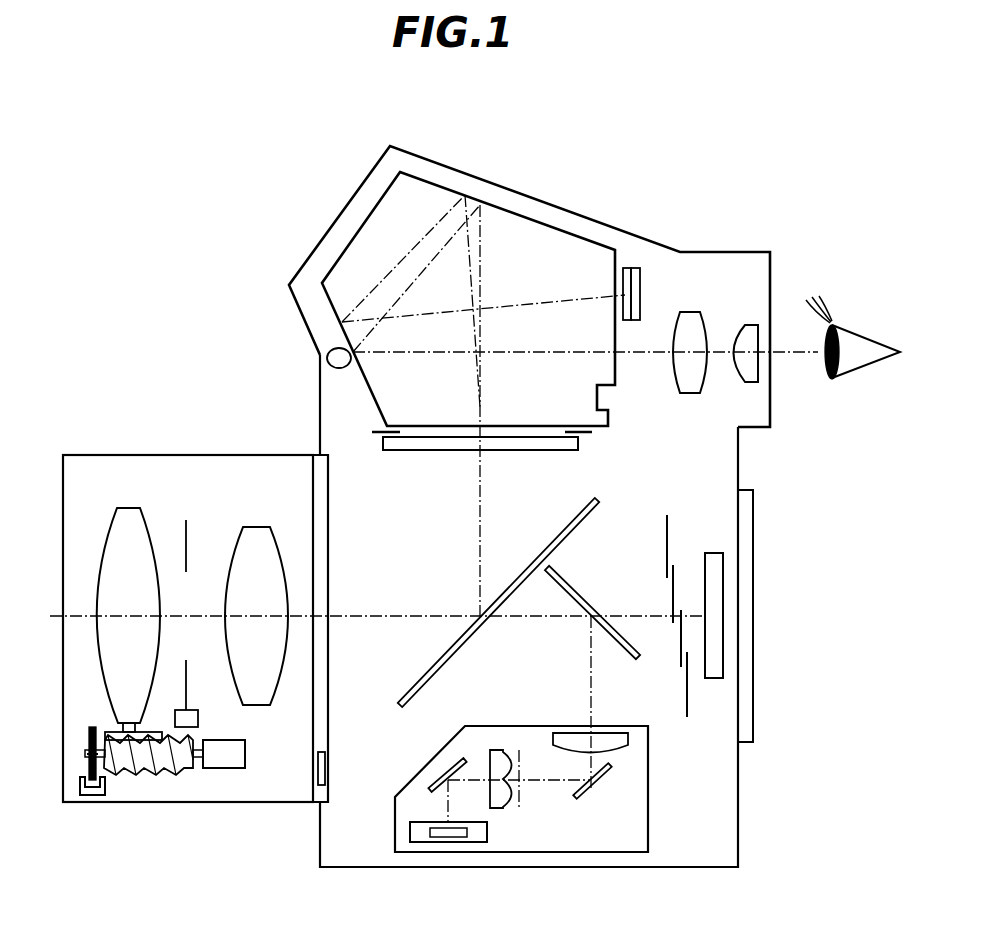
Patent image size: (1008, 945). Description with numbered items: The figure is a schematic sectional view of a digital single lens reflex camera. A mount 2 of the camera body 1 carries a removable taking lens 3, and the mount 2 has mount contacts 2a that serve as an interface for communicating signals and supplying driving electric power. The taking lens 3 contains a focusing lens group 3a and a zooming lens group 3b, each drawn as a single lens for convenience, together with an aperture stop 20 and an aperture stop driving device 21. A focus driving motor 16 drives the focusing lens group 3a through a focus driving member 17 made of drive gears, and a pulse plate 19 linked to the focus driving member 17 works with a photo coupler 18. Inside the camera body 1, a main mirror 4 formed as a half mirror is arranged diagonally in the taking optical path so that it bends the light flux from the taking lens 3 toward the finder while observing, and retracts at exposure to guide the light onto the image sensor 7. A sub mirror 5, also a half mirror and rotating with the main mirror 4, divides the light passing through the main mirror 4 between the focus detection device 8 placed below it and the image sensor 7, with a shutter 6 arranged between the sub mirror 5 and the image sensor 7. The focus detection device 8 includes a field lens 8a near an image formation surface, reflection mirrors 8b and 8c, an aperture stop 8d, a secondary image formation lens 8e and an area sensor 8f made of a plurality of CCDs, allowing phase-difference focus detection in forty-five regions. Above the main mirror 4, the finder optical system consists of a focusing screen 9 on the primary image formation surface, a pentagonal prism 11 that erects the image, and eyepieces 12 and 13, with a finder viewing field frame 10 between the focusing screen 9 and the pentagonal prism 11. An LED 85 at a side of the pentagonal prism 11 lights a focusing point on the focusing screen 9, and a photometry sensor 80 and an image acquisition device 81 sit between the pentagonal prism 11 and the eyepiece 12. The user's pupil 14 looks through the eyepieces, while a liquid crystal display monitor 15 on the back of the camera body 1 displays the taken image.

The camera body 1 is at (488, 185).
The mount 2 is at (330, 537).
The mount contacts 2a is at (325, 752).
The taking lens 3 is at (75, 455).
The focusing lens group 3a is at (128, 508).
The zooming lens group 3b is at (258, 527).
The main mirror 4 is at (562, 528).
The sub mirror 5 is at (577, 593).
The shutter 6 is at (665, 533).
The image sensor 7 is at (718, 552).
The focus detection device 8 is at (602, 725).
The field lens 8a is at (628, 737).
The reflection mirror 8b is at (608, 783).
The reflection mirror 8c is at (448, 762).
The aperture stop 8d is at (520, 755).
The secondary image formation lens 8e is at (500, 752).
The area sensor 8f is at (468, 842).
The focusing screen 9 is at (403, 450).
The finder viewing field frame 10 is at (590, 433).
The pentagonal prism 11 is at (365, 217).
The eyepiece 12 is at (677, 393).
The eyepiece 13 is at (745, 325).
The pupil 14 is at (858, 372).
The liquid crystal display monitor 15 is at (753, 503).
The focus driving motor 16 is at (222, 768).
The focus driving member 17 is at (155, 775).
The photo coupler 18 is at (85, 796).
The pulse plate 19 is at (89, 738).
The aperture stop 20 is at (186, 520).
The aperture stop driving device 21 is at (200, 713).
The photometry sensor 80 is at (625, 268).
The image acquisition device 81 is at (640, 287).
The LED 85 is at (327, 358).